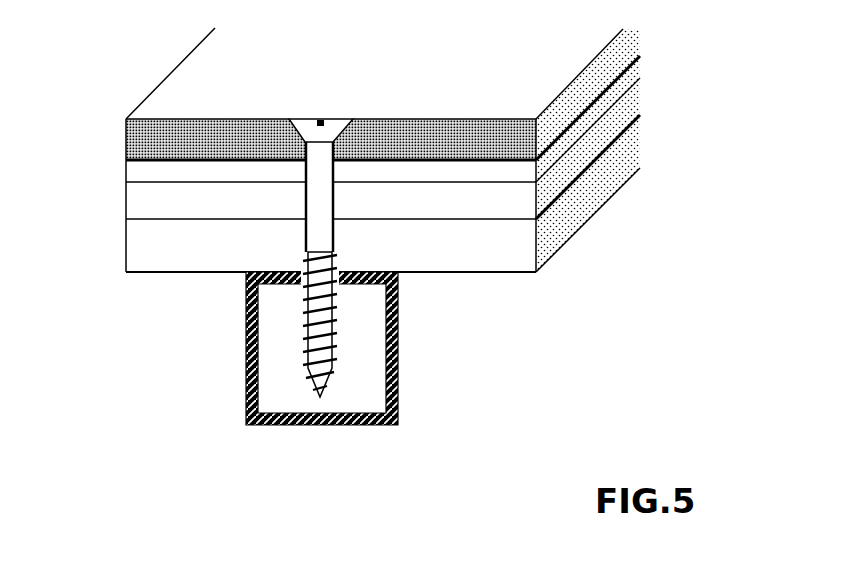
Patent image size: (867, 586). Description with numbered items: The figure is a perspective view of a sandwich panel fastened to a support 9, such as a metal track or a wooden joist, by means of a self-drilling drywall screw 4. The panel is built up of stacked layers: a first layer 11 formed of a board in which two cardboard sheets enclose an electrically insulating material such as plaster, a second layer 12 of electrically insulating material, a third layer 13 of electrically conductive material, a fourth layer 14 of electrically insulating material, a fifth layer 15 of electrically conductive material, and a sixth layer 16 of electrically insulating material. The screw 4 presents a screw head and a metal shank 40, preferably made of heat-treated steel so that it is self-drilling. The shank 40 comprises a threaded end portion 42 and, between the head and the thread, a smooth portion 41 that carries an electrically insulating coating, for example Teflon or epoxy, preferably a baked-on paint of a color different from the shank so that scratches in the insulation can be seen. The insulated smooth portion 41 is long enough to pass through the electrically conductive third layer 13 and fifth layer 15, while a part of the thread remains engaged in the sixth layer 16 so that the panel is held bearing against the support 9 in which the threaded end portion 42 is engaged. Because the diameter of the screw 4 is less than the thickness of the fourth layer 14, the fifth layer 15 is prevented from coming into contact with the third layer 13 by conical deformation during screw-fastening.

The self-drilling drywall screw 4 is at (336, 112).
The support 9 is at (400, 355).
The first layer 11 is at (137, 145).
The second layer 12 is at (625, 75).
The third layer 13 is at (130, 190).
The fourth layer 14 is at (138, 203).
The fifth layer 15 is at (152, 218).
The sixth layer 16 is at (190, 257).
The metal shank 40 is at (363, 274).
The smooth portion 41 is at (325, 193).
The threaded end portion 42 is at (333, 337).